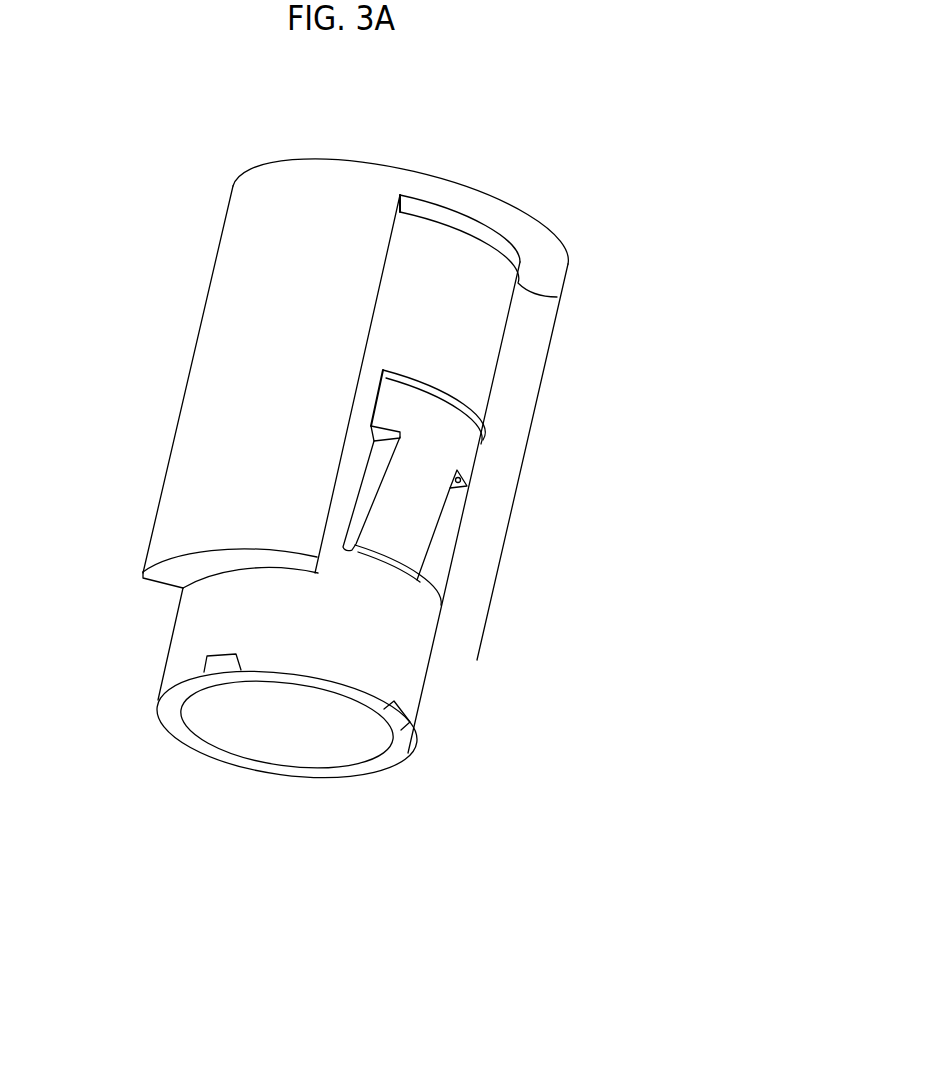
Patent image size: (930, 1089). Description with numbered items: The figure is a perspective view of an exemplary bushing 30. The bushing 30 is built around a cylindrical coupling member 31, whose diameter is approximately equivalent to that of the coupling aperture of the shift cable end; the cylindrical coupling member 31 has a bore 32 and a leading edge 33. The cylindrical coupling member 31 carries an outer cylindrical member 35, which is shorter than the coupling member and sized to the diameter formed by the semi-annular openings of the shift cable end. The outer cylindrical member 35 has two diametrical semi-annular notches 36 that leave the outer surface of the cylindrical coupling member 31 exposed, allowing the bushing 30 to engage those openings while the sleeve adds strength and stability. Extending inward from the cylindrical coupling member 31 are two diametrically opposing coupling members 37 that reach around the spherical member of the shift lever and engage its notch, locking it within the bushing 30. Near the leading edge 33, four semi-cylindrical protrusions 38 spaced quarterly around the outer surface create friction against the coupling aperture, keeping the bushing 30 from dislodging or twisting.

The bushing 30 is at (145, 345).
The cylindrical coupling member 31 is at (353, 646).
The bore 32 is at (268, 732).
The leading edge 33 is at (380, 771).
The outer cylindrical member 35 is at (278, 254).
The semi-annular notches 36 is at (520, 260).
The coupling members 37 is at (420, 505).
The semi-cylindrical protrusions 38 is at (214, 676).